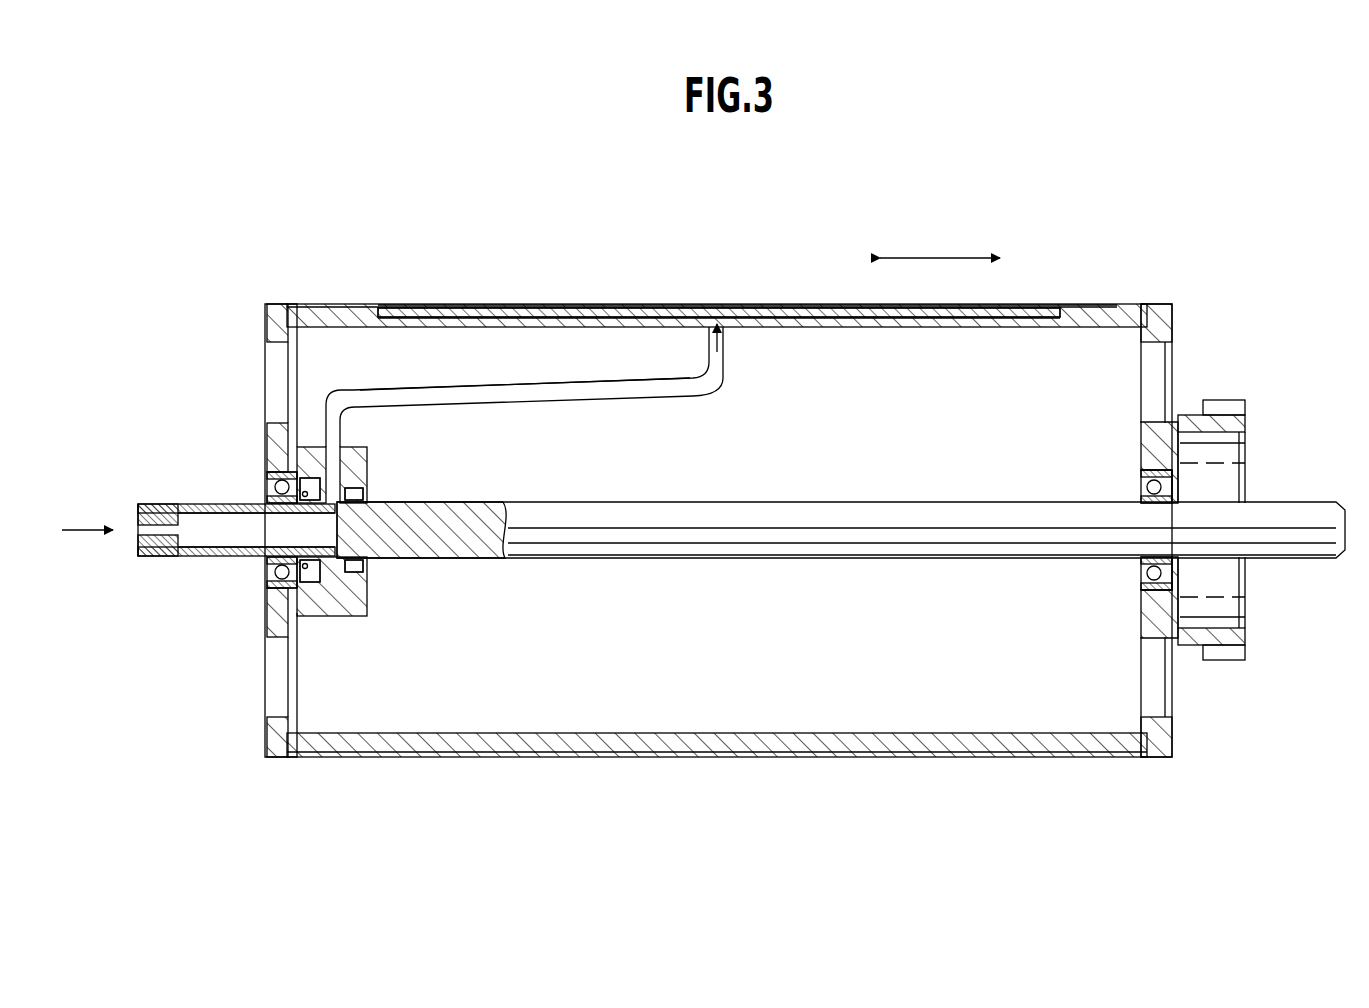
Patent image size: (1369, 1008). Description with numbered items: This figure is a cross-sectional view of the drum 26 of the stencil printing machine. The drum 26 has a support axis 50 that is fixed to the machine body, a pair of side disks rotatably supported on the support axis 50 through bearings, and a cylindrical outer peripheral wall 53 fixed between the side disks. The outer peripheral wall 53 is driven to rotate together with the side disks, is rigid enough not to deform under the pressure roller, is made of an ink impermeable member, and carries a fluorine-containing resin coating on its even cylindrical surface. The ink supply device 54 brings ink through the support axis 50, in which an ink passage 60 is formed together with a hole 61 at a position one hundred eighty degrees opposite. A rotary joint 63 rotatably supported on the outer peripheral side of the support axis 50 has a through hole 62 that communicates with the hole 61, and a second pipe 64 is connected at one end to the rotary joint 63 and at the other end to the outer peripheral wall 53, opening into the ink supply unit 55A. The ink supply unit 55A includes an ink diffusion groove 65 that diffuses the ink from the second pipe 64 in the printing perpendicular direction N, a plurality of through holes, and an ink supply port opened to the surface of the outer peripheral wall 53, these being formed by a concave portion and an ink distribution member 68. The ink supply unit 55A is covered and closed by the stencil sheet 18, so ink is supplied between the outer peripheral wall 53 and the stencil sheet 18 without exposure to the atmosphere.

The drum 26 is at (483, 258).
The stencil sheet 18 is at (1037, 302).
The support axis 50 is at (168, 504).
The outer peripheral wall 53 is at (537, 745).
The ink supply device 54 is at (560, 368).
The ink supply unit 55A is at (648, 292).
The ink passage 60 is at (203, 540).
The hole 61 is at (372, 507).
The through hole 62 is at (332, 462).
The rotary joint 63 is at (325, 617).
The second pipe 64 is at (652, 394).
The ink diffusion groove 65 is at (853, 308).
The ink distribution member 68 is at (780, 302).
The printing perpendicular direction N is at (946, 258).